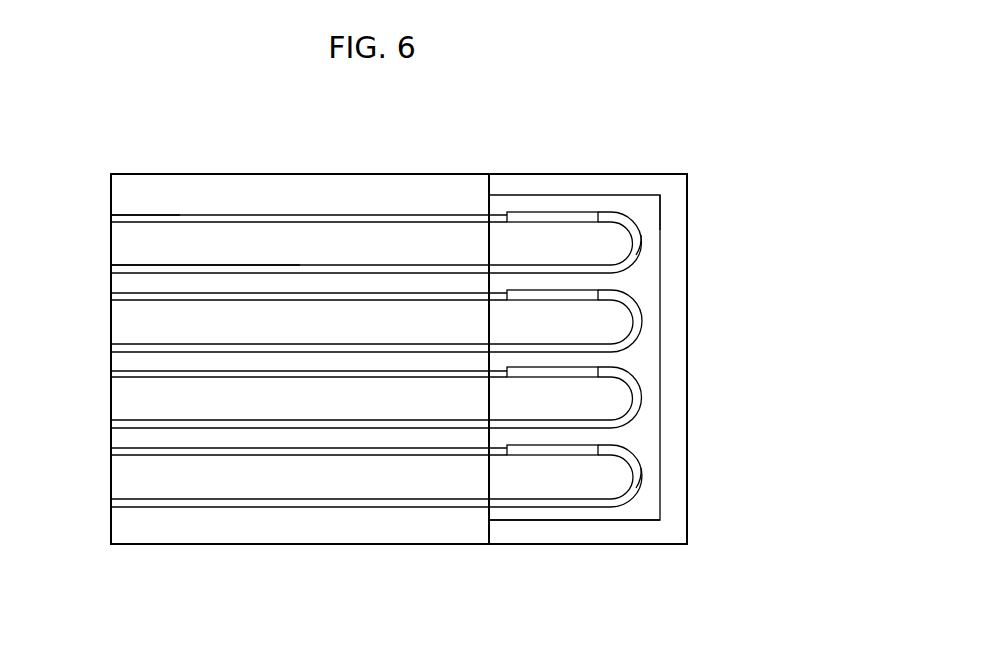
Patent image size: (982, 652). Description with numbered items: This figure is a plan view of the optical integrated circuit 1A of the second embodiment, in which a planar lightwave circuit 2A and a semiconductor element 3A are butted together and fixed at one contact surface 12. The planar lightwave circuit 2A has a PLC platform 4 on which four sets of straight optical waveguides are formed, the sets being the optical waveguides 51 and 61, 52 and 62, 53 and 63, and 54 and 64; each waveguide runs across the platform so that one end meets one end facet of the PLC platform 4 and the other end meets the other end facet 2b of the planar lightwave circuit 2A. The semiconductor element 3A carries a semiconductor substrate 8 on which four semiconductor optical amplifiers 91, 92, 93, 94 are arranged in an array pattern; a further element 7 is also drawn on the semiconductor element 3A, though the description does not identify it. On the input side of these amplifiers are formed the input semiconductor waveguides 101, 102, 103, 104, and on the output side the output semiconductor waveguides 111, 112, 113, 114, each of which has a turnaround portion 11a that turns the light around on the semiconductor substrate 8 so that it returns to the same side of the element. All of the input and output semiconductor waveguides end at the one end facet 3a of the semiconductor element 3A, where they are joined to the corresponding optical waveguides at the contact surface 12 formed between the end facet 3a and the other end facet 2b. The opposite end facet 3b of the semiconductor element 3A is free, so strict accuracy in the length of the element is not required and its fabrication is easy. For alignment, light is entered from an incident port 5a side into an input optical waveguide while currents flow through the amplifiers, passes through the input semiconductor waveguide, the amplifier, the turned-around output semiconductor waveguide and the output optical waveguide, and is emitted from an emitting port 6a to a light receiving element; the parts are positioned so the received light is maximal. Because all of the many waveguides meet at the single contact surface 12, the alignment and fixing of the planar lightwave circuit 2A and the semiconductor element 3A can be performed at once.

The optical integrated circuit 1A is at (297, 160).
The planar lightwave circuit 2A is at (262, 546).
The other end facet of planar lightwave circuit 2b is at (494, 202).
The semiconductor element 3A is at (553, 198).
The end facet of semiconductor element 3a is at (489, 513).
The end facet opposite to end facet 3a 3b is at (662, 213).
The PLC platform 4 is at (325, 545).
The incident port 5a is at (111, 219).
The optical waveguide 51 is at (250, 215).
The optical waveguide 52 is at (111, 297).
The optical waveguide 53 is at (111, 375).
The optical waveguide 54 is at (111, 452).
The emitting port 6a is at (111, 269).
The optical waveguide 61 is at (186, 265).
The optical waveguide 62 is at (111, 348).
The optical waveguide 63 is at (111, 424).
The optical waveguide 64 is at (111, 502).
The insulating layer 7 is at (600, 536).
The semiconductor substrate 8 is at (637, 360).
The semiconductor optical amplifier 91 is at (588, 212).
The semiconductor optical amplifier 92 is at (604, 295).
The semiconductor optical amplifier 93 is at (604, 372).
The semiconductor optical amplifier 94 is at (585, 443).
The input semiconductor waveguide 101 is at (505, 212).
The input semiconductor waveguide 102 is at (552, 295).
The input semiconductor waveguide 103 is at (552, 372).
The input semiconductor waveguide 104 is at (499, 453).
The output semiconductor waveguide 111 is at (623, 272).
The output semiconductor waveguide 112 is at (626, 321).
The output semiconductor waveguide 113 is at (626, 397).
The output semiconductor waveguide 114 is at (612, 502).
The turnaround portion 11a is at (643, 240).
The contact surface 12 is at (490, 547).